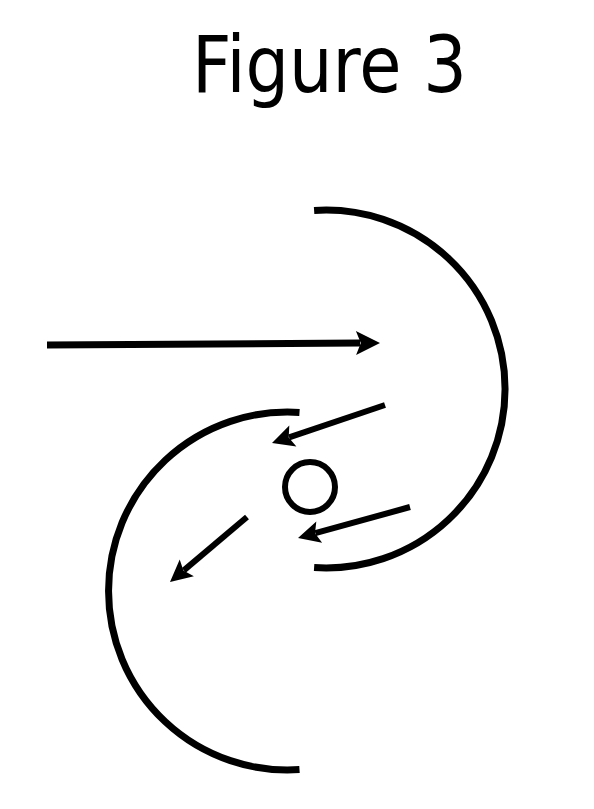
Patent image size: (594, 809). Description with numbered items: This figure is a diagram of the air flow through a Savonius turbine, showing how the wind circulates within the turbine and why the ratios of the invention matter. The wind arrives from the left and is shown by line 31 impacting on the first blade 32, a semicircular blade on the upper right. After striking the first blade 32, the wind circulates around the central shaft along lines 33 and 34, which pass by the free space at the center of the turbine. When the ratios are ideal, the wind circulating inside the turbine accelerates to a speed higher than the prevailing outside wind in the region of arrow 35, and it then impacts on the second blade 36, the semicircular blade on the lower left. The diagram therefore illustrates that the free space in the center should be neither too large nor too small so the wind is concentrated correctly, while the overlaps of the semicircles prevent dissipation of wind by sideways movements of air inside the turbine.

The wind impact line 31 is at (213, 324).
The first blade 32 is at (438, 389).
The circulation line 33 is at (354, 414).
The circulation line 34 is at (374, 501).
The accelerated wind arrow 35 is at (215, 558).
The second blade 36 is at (178, 591).